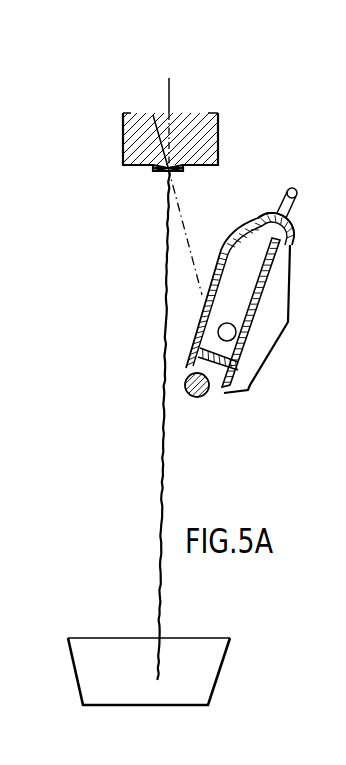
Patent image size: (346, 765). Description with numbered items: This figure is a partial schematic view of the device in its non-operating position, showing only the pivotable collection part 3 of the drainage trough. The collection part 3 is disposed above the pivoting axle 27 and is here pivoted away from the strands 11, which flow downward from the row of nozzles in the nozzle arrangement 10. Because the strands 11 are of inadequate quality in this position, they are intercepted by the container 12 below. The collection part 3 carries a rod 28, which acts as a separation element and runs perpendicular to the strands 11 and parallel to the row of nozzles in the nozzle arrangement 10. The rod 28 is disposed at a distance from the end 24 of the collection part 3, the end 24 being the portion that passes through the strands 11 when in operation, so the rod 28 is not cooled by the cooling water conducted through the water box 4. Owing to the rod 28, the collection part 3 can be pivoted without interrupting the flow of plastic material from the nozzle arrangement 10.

The collection part 3 is at (290, 308).
The water box 4 is at (236, 263).
The nozzle arrangement 10 is at (218, 133).
The strands 11 is at (166, 309).
The container 12 is at (123, 648).
The end of the collection part 24 is at (267, 217).
The pivoting axle 27 is at (186, 385).
The rod 28 is at (294, 190).